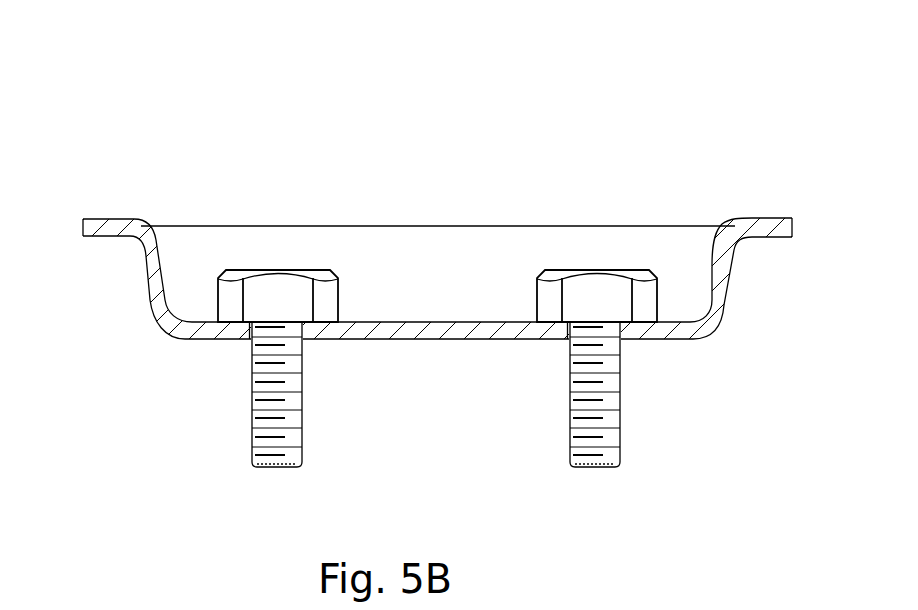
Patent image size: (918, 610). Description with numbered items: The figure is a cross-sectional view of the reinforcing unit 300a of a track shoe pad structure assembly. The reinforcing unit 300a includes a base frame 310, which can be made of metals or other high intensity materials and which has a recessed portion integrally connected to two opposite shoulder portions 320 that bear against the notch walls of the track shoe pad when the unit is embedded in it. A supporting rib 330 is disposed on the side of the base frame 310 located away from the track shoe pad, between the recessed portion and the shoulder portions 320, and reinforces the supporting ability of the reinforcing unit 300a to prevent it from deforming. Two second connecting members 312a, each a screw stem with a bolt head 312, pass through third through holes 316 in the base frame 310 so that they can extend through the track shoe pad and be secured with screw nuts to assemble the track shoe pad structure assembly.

The reinforcing unit 300a is at (172, 112).
The base frame 310 is at (437, 320).
The bolt 312 is at (278, 443).
The second connecting member 312a is at (240, 269).
The third through hole 316 is at (252, 333).
The shoulder portions 320 is at (82, 228).
The supporting rib 330 is at (367, 243).